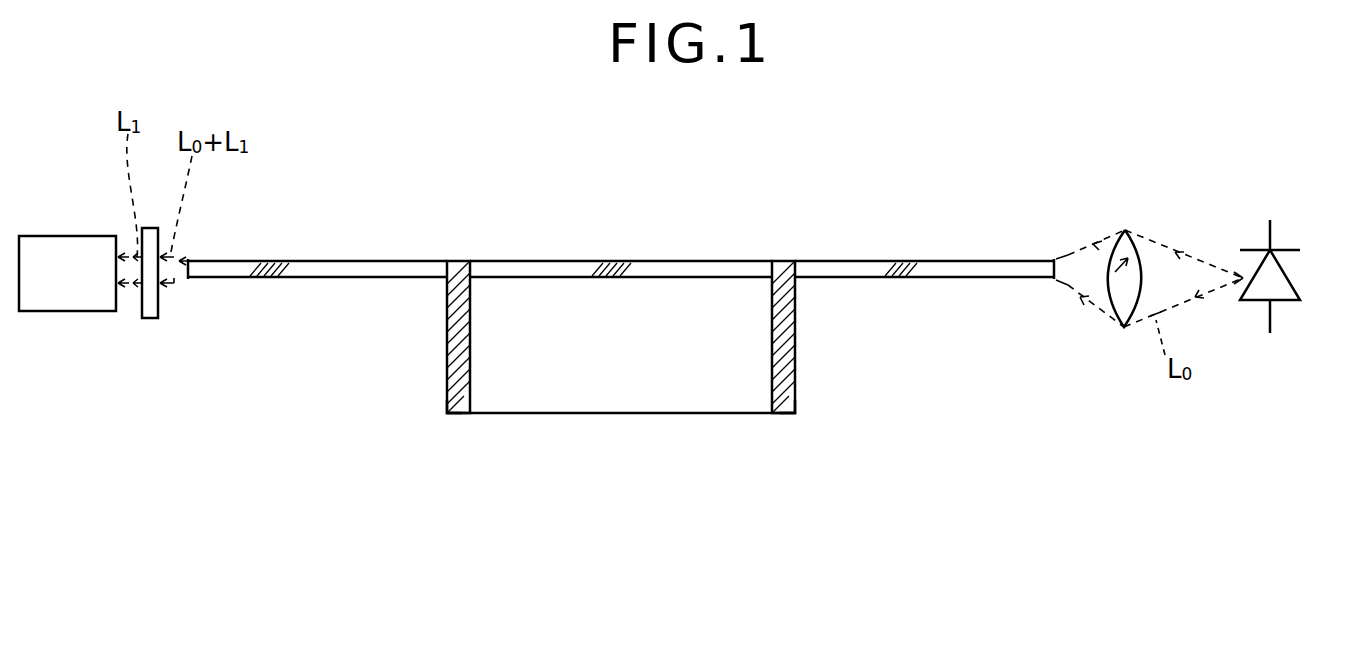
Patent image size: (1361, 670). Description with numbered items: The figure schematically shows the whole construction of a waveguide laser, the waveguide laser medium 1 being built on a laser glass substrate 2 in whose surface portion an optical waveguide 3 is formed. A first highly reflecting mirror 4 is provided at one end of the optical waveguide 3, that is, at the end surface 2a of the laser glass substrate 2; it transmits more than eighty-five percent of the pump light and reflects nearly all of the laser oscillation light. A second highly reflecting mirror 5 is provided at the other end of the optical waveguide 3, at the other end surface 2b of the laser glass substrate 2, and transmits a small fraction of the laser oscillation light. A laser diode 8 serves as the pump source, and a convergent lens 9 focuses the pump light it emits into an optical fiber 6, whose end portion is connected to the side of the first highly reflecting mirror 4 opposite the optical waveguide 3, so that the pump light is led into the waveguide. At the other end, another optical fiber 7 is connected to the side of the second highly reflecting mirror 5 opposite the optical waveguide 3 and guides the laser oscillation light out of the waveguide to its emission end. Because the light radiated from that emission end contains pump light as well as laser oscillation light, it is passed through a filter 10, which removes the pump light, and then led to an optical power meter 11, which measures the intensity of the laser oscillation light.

The waveguide laser medium 1 is at (704, 231).
The laser glass substrate 2 is at (701, 414).
The end surface of the laser glass substrate 2a is at (795, 328).
The other end surface of the laser glass substrate 2b is at (447, 330).
The optical waveguide 3 is at (545, 267).
The first highly reflecting mirror 4 is at (795, 388).
The second highly reflecting mirror 5 is at (447, 400).
The optical fiber 6 is at (915, 279).
The optical fiber 7 is at (256, 259).
The laser diode 8 is at (1302, 290).
The convergent lens 9 is at (1118, 318).
The filter 10 is at (150, 319).
The optical power meter 11 is at (80, 312).